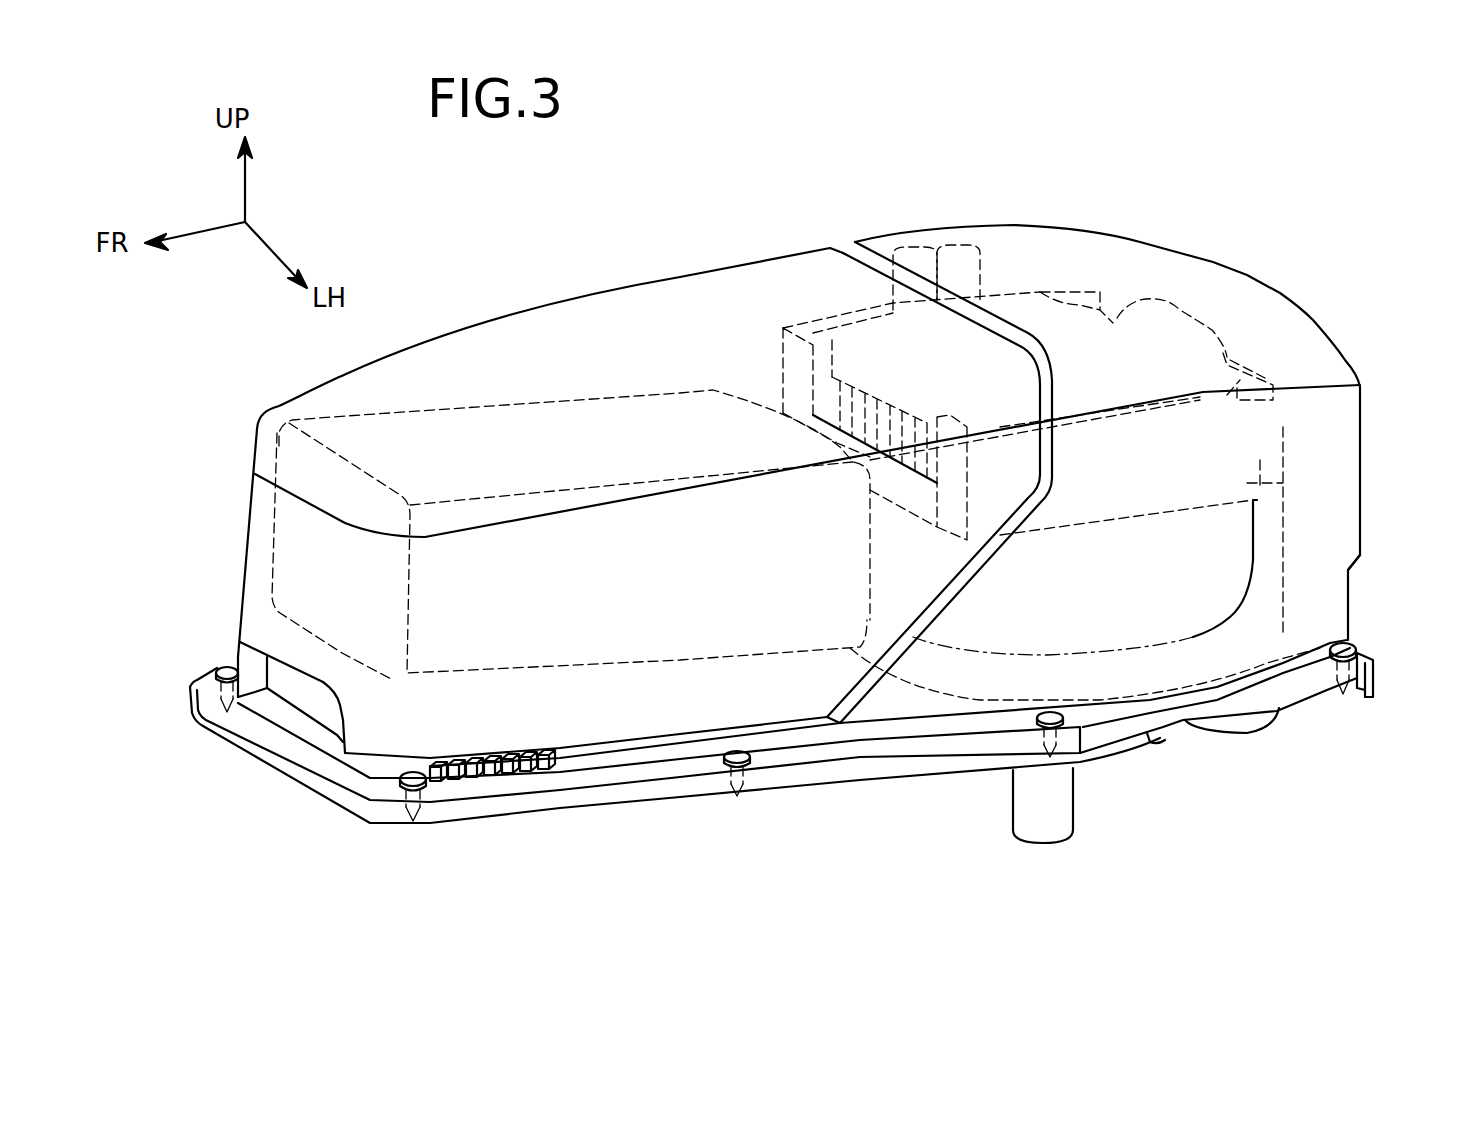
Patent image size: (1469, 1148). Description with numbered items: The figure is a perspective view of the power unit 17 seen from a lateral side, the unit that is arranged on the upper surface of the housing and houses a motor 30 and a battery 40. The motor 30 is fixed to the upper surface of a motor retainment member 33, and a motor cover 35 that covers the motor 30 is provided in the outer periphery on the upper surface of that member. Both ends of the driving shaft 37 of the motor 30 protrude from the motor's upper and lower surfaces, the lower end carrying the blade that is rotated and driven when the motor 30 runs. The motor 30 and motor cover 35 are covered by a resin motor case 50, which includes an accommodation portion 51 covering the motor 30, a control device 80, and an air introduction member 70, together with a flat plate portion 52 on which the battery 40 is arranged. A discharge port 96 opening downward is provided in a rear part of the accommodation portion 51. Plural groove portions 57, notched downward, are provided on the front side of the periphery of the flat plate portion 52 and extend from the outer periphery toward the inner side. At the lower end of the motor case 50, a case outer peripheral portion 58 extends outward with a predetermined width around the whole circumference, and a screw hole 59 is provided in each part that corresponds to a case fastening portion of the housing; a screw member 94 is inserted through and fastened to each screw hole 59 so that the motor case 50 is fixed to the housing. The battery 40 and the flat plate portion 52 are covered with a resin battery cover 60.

The power unit 17 is at (720, 170).
The motor 30 is at (1193, 642).
The motor retainment member 33 is at (1263, 723).
The motor cover 35 is at (1290, 545).
The driving shaft 37 is at (1045, 822).
The battery 40 is at (538, 433).
The motor case 50 is at (1140, 240).
The accommodation portion 51 is at (1330, 425).
The flat plate portion 52 is at (873, 260).
The groove portions 57 is at (437, 792).
The case outer peripheral portion 58 is at (920, 752).
The screw hole 59 is at (205, 680).
The battery cover 60 is at (623, 286).
The air introduction member 70 is at (1250, 483).
The control device 80 is at (1167, 343).
The screw member 94 is at (228, 664).
The discharge port 96 is at (1352, 572).